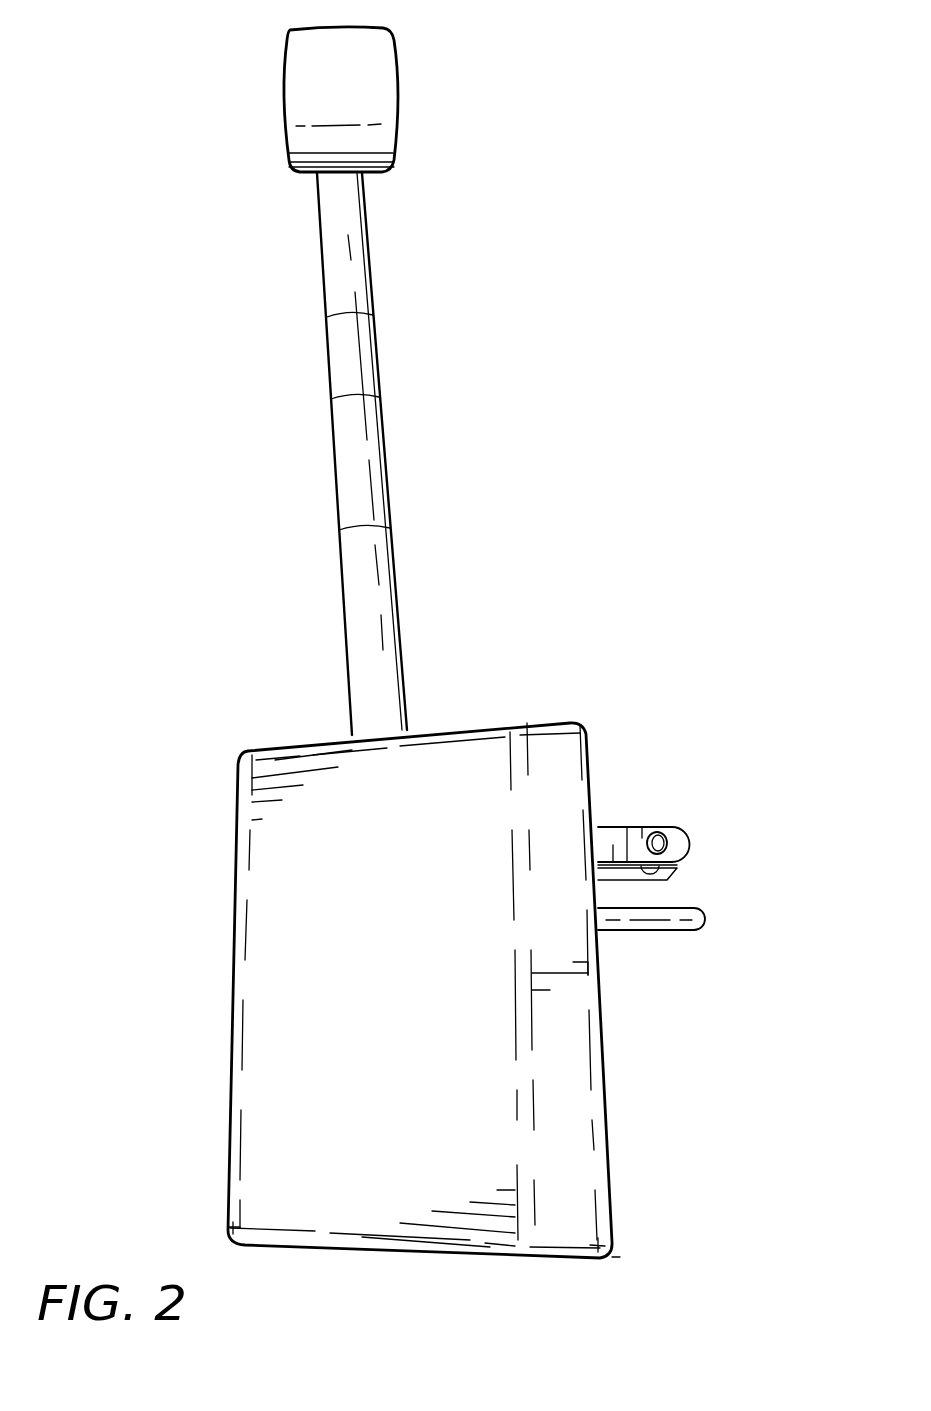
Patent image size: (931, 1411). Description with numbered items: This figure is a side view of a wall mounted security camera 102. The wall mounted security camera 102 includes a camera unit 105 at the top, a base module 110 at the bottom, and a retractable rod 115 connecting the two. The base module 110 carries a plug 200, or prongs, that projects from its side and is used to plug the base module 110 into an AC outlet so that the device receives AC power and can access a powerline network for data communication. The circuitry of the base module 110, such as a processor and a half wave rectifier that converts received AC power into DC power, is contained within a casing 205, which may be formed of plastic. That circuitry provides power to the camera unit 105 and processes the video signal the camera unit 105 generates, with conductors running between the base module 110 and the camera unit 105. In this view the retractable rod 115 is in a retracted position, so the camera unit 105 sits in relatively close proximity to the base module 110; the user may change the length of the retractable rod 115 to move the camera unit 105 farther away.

The wall mounted security camera 102 is at (538, 440).
The camera unit 105 is at (400, 98).
The base module 110 is at (237, 877).
The retractable rod 115 is at (333, 457).
The plug 200 is at (672, 832).
The casing 205 is at (543, 1262).